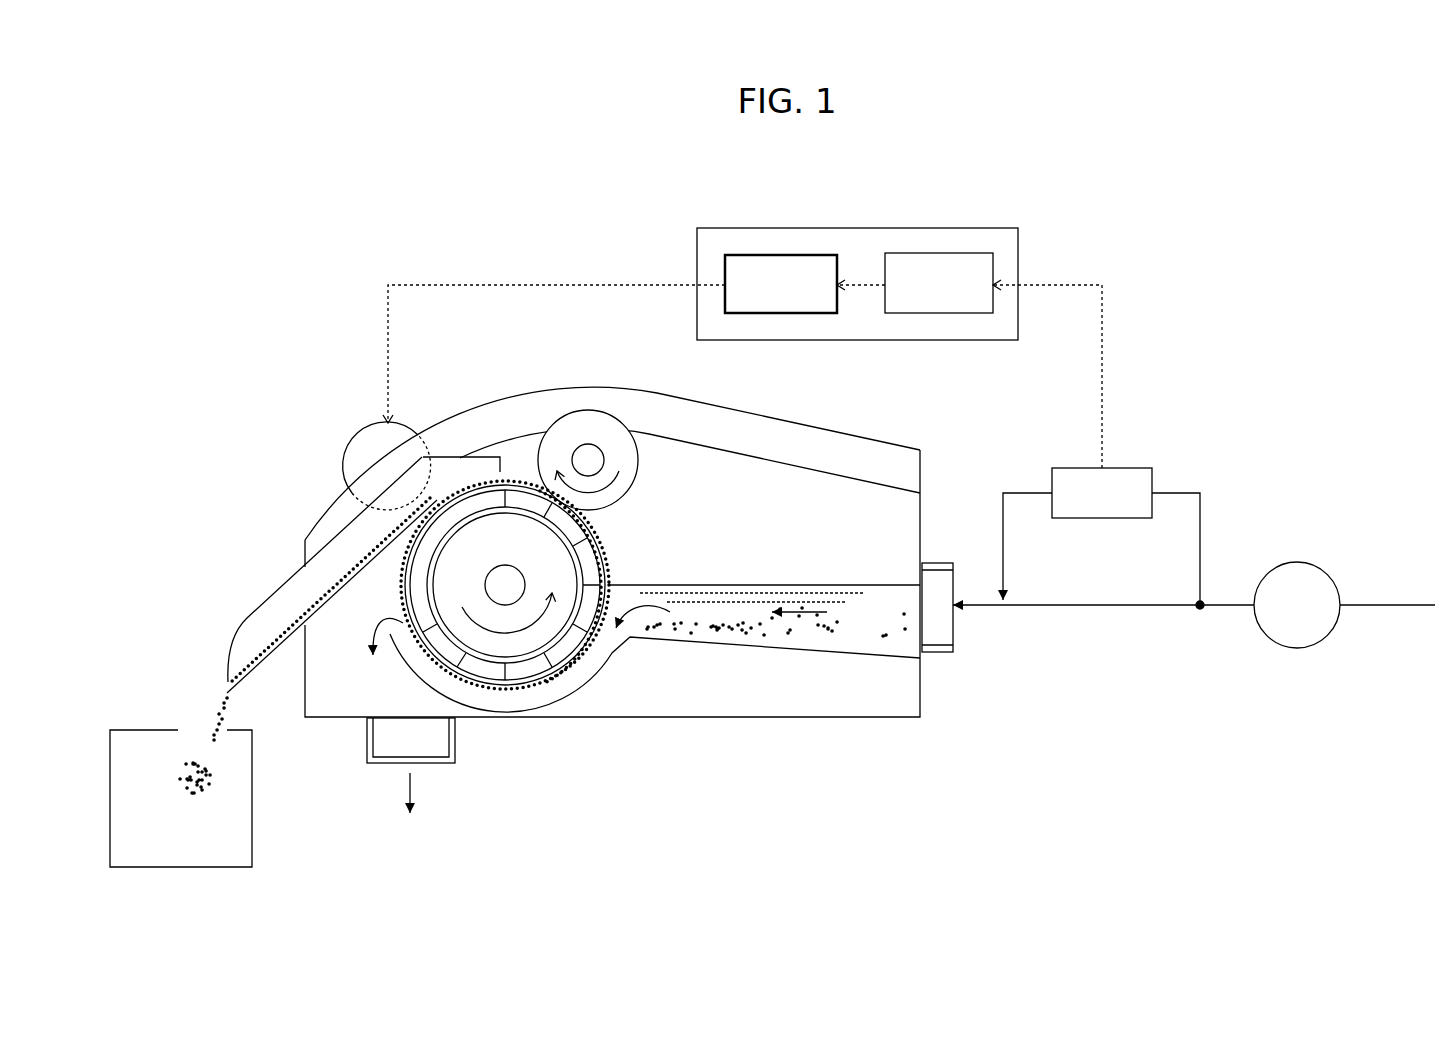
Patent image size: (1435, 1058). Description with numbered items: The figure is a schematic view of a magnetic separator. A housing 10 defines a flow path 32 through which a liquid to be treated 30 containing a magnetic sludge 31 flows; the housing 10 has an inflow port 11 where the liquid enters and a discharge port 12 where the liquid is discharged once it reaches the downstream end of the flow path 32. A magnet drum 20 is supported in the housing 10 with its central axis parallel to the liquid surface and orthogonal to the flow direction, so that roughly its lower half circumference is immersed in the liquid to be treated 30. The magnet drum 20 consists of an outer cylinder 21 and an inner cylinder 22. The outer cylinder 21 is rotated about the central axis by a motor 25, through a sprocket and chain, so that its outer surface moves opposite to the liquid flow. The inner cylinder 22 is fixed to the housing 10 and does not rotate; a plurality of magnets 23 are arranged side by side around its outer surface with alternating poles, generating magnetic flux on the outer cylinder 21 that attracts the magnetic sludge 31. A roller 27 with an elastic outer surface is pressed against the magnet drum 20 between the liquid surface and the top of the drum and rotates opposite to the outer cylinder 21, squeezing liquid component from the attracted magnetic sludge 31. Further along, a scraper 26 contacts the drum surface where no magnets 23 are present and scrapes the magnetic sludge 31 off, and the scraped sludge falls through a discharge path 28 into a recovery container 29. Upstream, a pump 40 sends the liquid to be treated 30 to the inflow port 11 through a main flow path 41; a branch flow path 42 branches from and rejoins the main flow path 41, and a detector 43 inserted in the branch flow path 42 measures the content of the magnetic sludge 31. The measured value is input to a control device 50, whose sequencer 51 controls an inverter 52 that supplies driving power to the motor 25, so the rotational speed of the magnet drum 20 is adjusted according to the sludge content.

The housing 10 is at (857, 437).
The inflow port 11 is at (925, 563).
The discharge port 12 is at (455, 758).
The magnet drum 20 is at (398, 592).
The outer cylinder 21 is at (407, 552).
The inner cylinder 22 is at (447, 545).
The magnets 23 is at (565, 525).
The motor 25 is at (358, 440).
The scraper 26 is at (413, 523).
The roller 27 is at (602, 413).
The discharge path 28 is at (293, 608).
The recovery container 29 is at (133, 730).
The liquid to be treated 30 is at (798, 583).
The magnetic sludge 31 is at (802, 638).
The flow path 32 is at (610, 665).
The pump 40 is at (1327, 575).
The main flow path 41 is at (1110, 608).
The branch flow path 42 is at (1203, 522).
The detector 43 is at (1138, 468).
The control device 50 is at (1005, 228).
The sequencer 51 is at (918, 253).
The inverter 52 is at (773, 255).